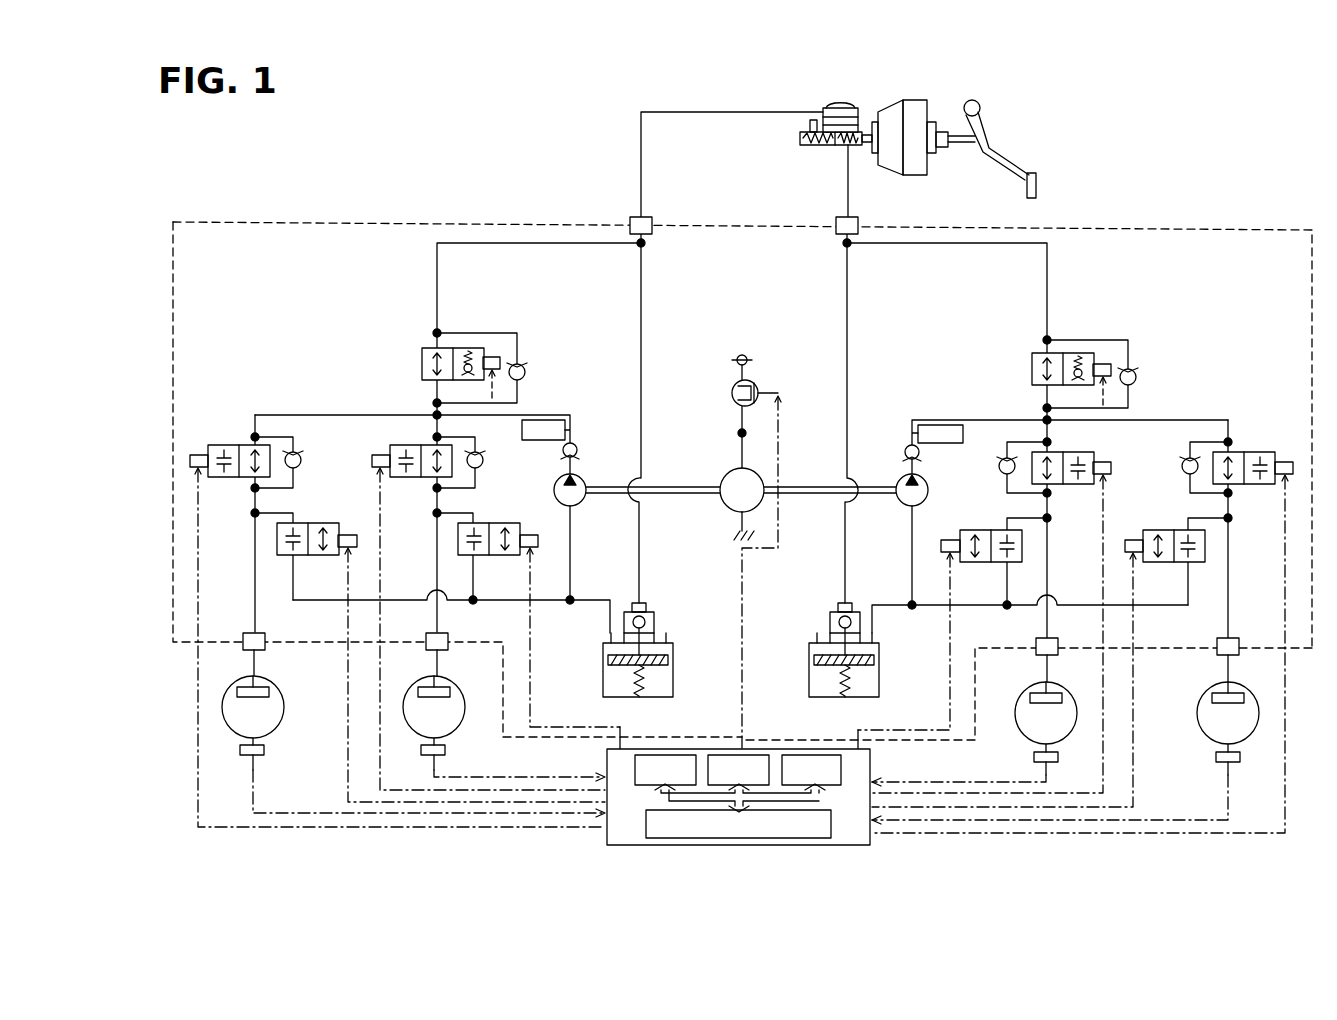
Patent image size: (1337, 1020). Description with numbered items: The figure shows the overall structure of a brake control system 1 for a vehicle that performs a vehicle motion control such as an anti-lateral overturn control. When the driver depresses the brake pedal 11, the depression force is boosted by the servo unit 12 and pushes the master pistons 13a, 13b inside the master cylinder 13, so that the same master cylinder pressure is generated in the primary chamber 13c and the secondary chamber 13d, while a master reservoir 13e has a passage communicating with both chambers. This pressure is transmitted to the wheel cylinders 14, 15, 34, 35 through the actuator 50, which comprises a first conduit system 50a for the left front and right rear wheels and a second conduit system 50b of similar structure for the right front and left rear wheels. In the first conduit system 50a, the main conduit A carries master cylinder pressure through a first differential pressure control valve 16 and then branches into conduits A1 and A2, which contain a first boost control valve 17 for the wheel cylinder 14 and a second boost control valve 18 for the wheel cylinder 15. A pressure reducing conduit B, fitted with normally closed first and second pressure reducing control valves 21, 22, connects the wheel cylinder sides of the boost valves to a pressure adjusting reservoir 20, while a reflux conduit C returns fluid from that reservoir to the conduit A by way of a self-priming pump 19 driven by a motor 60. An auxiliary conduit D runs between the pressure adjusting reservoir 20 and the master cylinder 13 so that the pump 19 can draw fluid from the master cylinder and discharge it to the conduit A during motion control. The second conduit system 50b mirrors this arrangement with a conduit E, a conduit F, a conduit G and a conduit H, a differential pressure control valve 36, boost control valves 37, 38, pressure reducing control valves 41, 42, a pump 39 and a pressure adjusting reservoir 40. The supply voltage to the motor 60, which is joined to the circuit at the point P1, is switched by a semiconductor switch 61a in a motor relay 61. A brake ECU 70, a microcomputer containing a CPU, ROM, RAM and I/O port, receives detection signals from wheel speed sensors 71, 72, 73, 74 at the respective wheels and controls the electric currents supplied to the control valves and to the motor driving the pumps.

The brake control system 1 is at (1108, 138).
The brake pedal 11 is at (990, 126).
The servo unit 12 is at (910, 100).
The master cylinder 13 is at (831, 147).
The master piston 13a is at (832, 147).
The master piston 13b is at (870, 147).
The primary chamber 13c is at (809, 134).
The secondary chamber 13d is at (853, 147).
The master reservoir 13e is at (834, 101).
The wheel cylinder 14 is at (236, 691).
The wheel cylinder 15 is at (418, 691).
The first differential pressure control valve 16 is at (420, 370).
The first boost control valve 17 is at (240, 445).
The second boost control valve 18 is at (420, 445).
The self-priming pump 19 is at (553, 492).
The pressure adjusting reservoir 20 is at (596, 701).
The first pressure reducing control valve 21 is at (297, 523).
The second pressure reducing control valve 22 is at (487, 528).
The wheel cylinder 34 is at (1260, 694).
The wheel cylinder 35 is at (1078, 692).
The differential pressure control valve 36 is at (1030, 370).
The boost control valve 37 is at (1240, 452).
The boost control valve 38 is at (1062, 452).
The pump 39 is at (928, 492).
The reservoir accumulator 40 is at (887, 701).
The pressure reducing control valve 41 is at (1180, 530).
The pressure reducing control valve 42 is at (995, 530).
The actuator 50 is at (1298, 230).
The first conduit system 50a is at (248, 266).
The second conduit system 50b is at (1249, 270).
The motor 60 is at (720, 458).
The motor relay 61 is at (731, 374).
The semiconductor switch 61a is at (758, 388).
The brake ECU 70 is at (872, 762).
The wheel speed sensor 71 is at (266, 751).
The wheel speed sensor 72 is at (446, 751).
The wheel speed sensor 73 is at (1033, 757).
The wheel speed sensor 74 is at (1215, 757).
The conduit A is at (457, 255).
The conduit A1 is at (253, 578).
The conduit A2 is at (434, 576).
The conduit B is at (487, 608).
The conduit C is at (540, 418).
The conduit D is at (725, 357).
The hydraulic passage E is at (1024, 258).
The hydraulic passage F is at (995, 608).
The hydraulic passage G is at (946, 418).
The hydraulic passage H is at (842, 374).
The pressure detection point P1 is at (738, 430).